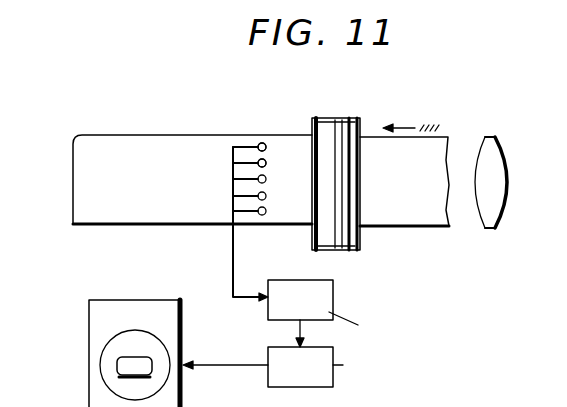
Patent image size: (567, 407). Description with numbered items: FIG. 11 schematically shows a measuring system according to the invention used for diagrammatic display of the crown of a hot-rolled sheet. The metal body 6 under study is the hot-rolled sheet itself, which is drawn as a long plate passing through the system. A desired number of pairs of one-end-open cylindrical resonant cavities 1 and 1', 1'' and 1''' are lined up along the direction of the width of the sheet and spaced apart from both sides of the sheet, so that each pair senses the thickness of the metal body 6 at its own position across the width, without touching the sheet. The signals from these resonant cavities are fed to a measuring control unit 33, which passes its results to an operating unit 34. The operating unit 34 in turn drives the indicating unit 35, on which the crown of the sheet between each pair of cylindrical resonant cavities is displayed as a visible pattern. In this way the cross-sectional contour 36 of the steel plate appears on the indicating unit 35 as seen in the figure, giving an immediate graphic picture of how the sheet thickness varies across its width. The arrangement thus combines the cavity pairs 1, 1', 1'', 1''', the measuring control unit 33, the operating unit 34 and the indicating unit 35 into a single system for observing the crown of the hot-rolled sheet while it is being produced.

The one-end-open cylindrical resonant cavity 1 is at (250, 188).
The one-end-open cylindrical resonant cavity 1' is at (235, 113).
The one-end-open cylindrical resonant cavity 1'' is at (292, 121).
The one-end-open cylindrical resonant cavity 1''' is at (215, 121).
The metal body 6 is at (276, 133).
The measuring control unit 33 is at (318, 314).
The operating unit 34 is at (318, 382).
The indicating unit 35 is at (139, 300).
The cross-sectional contour 36 is at (117, 366).